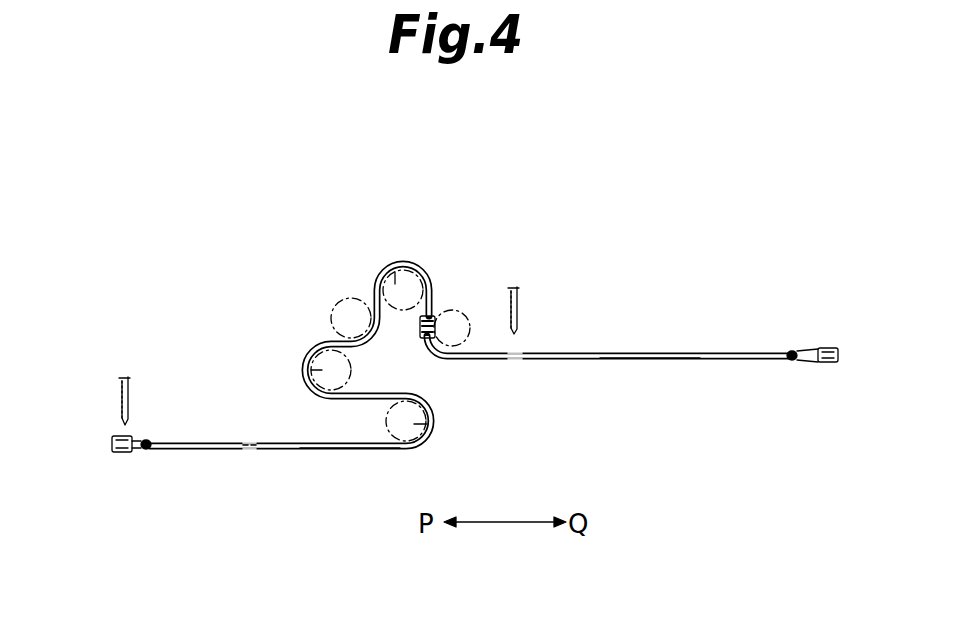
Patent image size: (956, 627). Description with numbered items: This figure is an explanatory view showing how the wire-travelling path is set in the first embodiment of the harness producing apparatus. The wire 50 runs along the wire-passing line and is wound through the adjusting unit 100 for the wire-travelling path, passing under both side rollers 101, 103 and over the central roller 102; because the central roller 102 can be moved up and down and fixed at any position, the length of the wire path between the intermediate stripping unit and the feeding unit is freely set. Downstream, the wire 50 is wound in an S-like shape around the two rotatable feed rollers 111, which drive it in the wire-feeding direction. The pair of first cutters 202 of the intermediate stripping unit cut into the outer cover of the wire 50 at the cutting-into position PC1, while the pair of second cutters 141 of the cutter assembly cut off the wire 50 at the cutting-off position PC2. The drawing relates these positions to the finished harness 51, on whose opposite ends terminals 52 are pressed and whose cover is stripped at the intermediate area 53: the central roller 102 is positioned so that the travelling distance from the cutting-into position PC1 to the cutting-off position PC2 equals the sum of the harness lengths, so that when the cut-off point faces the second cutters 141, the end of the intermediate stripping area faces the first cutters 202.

The wire 50 is at (302, 449).
The harness 51 is at (345, 449).
The intermediate area 53 is at (250, 452).
The terminals 52 is at (113, 437).
The adjusting unit for the wire-travelling path 100 is at (427, 257).
The side roller 101 is at (456, 309).
The central roller 102 is at (396, 280).
The side roller 103 is at (338, 299).
The feed rollers 111 is at (312, 364).
The cutters (second cutters) 141 is at (132, 381).
The cutters (first cutters) 202 is at (553, 276).
The cutting-into position PC1 is at (512, 361).
The cutting-off position PC2 is at (128, 454).